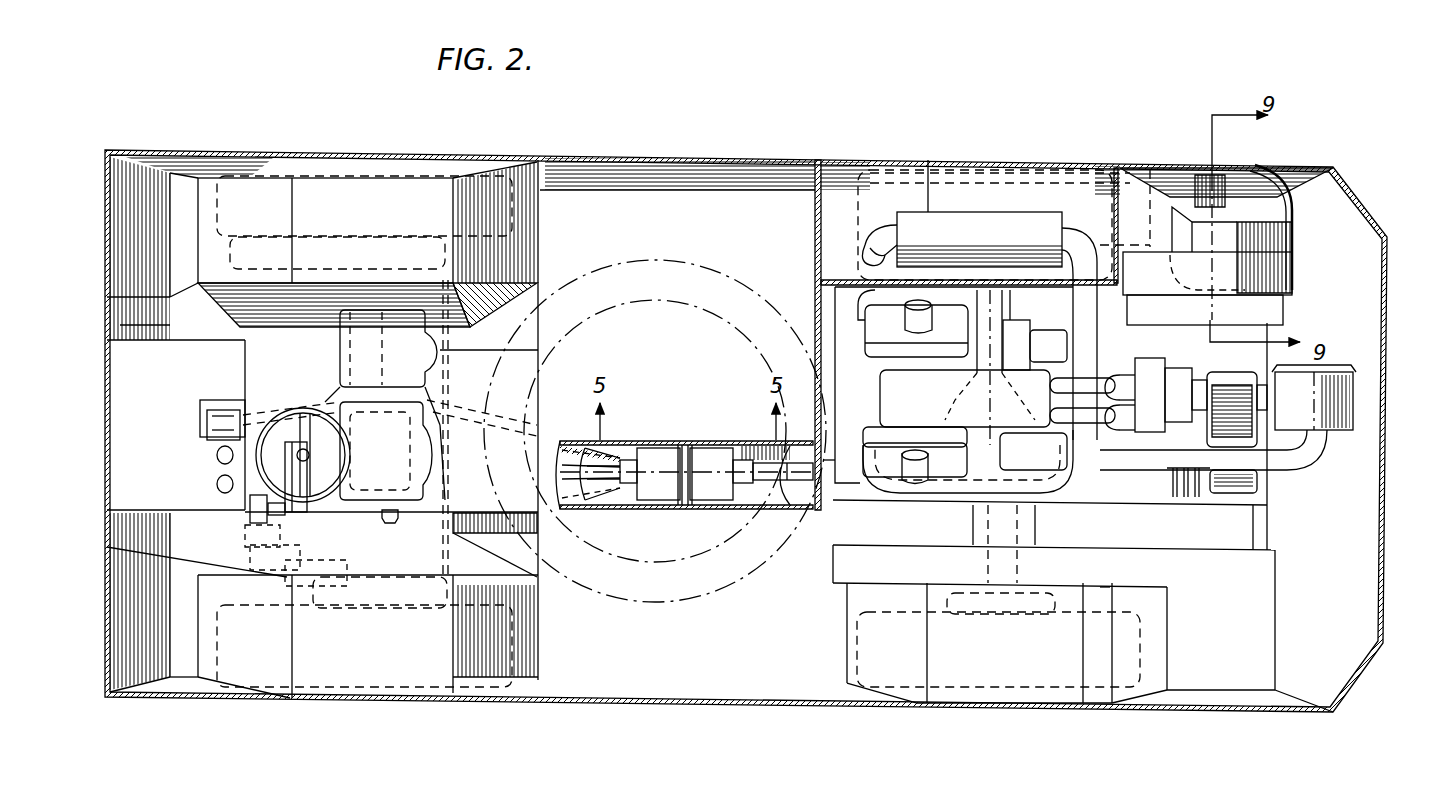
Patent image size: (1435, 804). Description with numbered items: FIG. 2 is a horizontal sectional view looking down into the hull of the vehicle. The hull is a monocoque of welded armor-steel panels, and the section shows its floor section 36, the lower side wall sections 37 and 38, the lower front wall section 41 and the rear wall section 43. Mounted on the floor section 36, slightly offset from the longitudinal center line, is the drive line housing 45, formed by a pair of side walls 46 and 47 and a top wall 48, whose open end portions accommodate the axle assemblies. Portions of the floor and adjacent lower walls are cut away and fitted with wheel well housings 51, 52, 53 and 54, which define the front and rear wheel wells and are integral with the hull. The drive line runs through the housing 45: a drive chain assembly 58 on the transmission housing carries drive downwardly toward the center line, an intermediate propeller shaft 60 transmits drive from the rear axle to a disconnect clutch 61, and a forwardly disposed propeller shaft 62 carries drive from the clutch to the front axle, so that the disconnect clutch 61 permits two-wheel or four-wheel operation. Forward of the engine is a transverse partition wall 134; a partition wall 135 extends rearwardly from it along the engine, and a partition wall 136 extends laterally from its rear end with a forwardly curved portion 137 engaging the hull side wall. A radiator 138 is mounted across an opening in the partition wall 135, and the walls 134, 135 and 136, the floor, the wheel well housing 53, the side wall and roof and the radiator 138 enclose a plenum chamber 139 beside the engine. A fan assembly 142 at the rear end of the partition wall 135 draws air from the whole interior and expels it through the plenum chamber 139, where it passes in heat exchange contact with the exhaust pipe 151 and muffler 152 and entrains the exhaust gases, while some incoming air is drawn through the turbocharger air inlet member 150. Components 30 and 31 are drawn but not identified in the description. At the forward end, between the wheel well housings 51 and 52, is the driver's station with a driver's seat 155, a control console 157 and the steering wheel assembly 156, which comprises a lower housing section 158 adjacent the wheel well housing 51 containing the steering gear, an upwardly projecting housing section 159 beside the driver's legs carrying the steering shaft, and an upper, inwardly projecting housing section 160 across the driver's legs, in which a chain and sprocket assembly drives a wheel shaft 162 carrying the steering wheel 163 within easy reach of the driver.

The hydraulic pump 30 is at (938, 403).
The engine 31 is at (1155, 372).
The floor section 36 is at (705, 665).
The lower side wall section 37 is at (575, 700).
The lower side wall section 38 is at (680, 157).
The lower front wall section 41 is at (148, 617).
The rear wall section 43 is at (1347, 593).
The drive line housing 45 is at (738, 508).
The side wall 46 is at (682, 441).
The side wall 47 is at (655, 509).
The top wall 48 is at (547, 487).
The wheel well housing 51 is at (525, 607).
The wheel well housing 52 is at (533, 258).
The wheel well housing 53 is at (850, 228).
The wheel well housing 54 is at (860, 637).
The drive chain assembly 58 is at (1258, 490).
The intermediate propeller shaft 60 is at (800, 495).
The disconnect clutch 61 is at (712, 490).
The forwardly disposed propeller shaft 62 is at (565, 520).
The partition wall 134 is at (815, 338).
The partition wall 135 is at (1018, 292).
The partition wall 136 is at (1293, 260).
The forwardly curved portion 137 is at (1290, 164).
The radiator 138 is at (1280, 310).
The plenum chamber 139 is at (1006, 207).
The fan assembly 142 is at (1303, 232).
The air inlet member 150 is at (1340, 435).
The exhaust pipe 151 is at (1085, 312).
The muffler 152 is at (979, 239).
The driver's seat 155 is at (400, 485).
The steering wheel assembly 156 is at (418, 351).
The control console 157 is at (215, 466).
The lower housing section 158 is at (252, 517).
The upwardly projecting housing section 159 is at (282, 522).
The upper inwardly projecting housing section 160 is at (313, 487).
The wheel shaft 162 is at (305, 455).
The steering wheel 163 is at (335, 448).